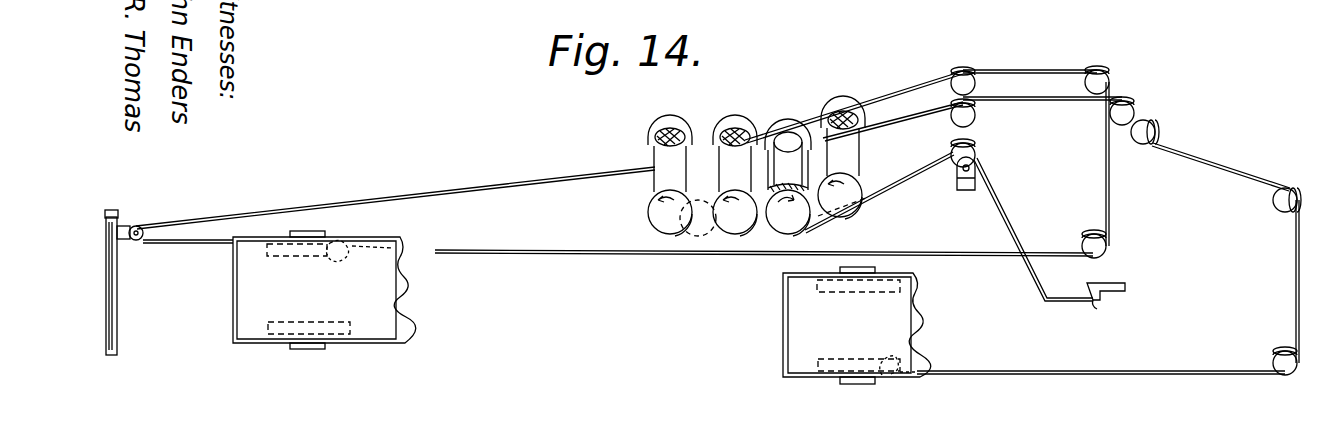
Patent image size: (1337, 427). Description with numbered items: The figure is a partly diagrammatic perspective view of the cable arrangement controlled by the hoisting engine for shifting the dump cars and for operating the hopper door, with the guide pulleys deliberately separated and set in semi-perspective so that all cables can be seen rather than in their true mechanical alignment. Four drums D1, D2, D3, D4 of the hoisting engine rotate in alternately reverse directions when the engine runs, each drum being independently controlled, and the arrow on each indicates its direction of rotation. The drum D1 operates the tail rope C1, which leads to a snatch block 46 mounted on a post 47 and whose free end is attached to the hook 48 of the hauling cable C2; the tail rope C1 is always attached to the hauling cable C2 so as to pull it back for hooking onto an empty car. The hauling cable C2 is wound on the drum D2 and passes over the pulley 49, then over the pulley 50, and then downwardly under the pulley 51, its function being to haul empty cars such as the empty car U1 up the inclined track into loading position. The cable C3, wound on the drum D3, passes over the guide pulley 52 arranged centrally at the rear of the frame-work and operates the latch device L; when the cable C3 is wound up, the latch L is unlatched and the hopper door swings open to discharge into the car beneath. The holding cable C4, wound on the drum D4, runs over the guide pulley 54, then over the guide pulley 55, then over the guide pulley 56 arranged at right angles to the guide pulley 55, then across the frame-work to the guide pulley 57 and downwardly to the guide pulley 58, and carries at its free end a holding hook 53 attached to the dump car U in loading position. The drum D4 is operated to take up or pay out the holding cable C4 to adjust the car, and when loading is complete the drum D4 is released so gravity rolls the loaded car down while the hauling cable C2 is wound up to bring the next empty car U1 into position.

The snatch block 46 is at (128, 224).
The post 47 is at (117, 325).
The hook 48 is at (358, 250).
The pulley 49 is at (968, 80).
The pulley 50 is at (1103, 78).
The pulley 51 is at (1106, 246).
The guide pulley 52 is at (957, 165).
The holding hook 53 is at (892, 380).
The guide pulley 54 is at (970, 118).
The guide pulley 55 is at (1130, 105).
The guide pulley 56 is at (1160, 127).
The guide pulley 57 is at (1290, 195).
The guide pulley 58 is at (1280, 350).
The tail rope C1 is at (536, 180).
The hauling cable C2 is at (508, 250).
The latch cable C3 is at (1005, 208).
The holding cable C4 is at (1050, 103).
The drum D1 is at (647, 212).
The drum D2 is at (725, 222).
The drum D3 is at (780, 225).
The drum D4 is at (840, 213).
The latch device L is at (1106, 308).
The dump car U is at (857, 325).
The empty car U1 is at (388, 330).